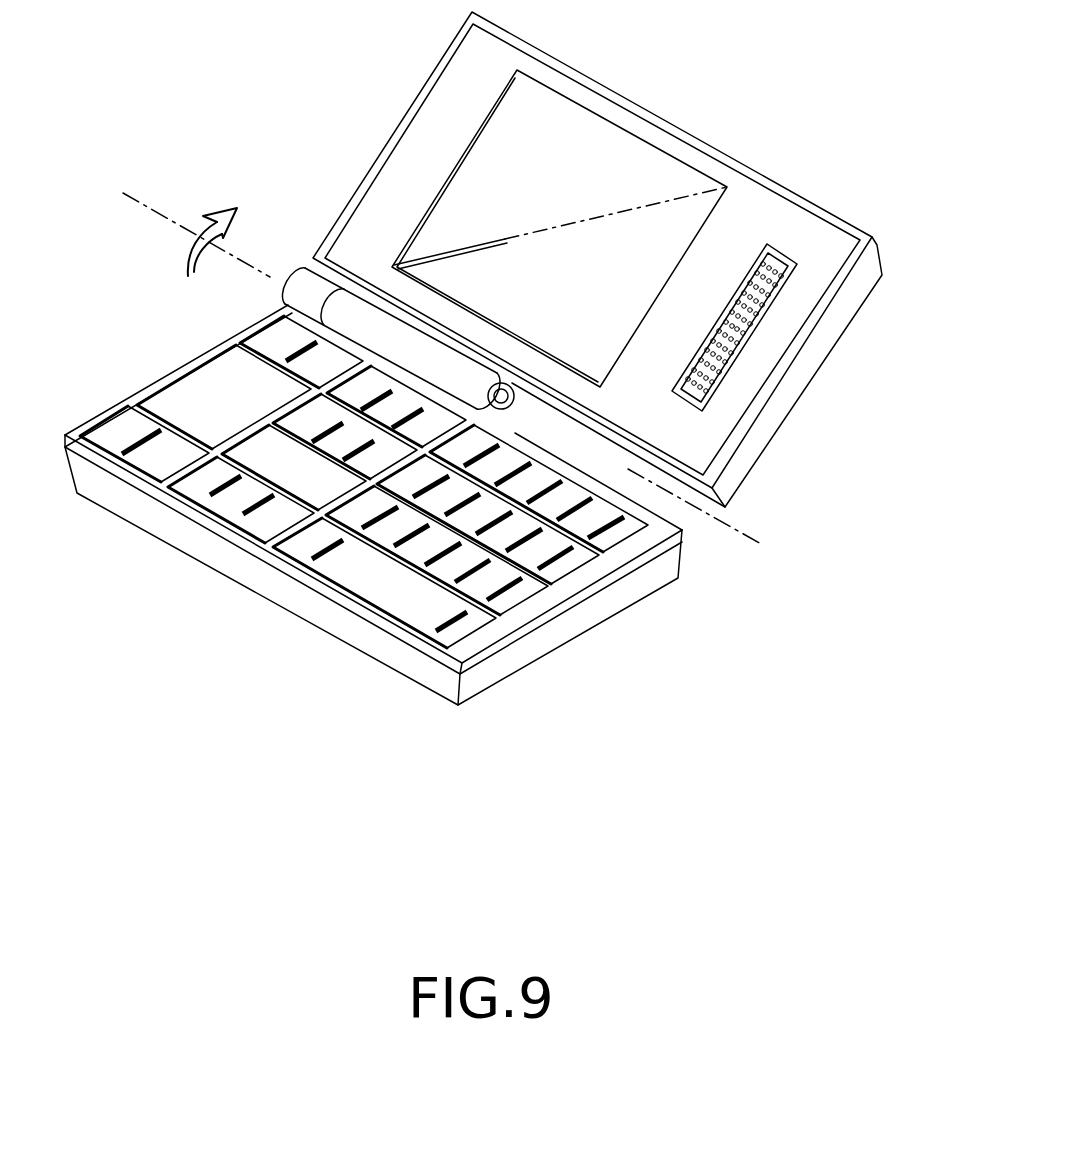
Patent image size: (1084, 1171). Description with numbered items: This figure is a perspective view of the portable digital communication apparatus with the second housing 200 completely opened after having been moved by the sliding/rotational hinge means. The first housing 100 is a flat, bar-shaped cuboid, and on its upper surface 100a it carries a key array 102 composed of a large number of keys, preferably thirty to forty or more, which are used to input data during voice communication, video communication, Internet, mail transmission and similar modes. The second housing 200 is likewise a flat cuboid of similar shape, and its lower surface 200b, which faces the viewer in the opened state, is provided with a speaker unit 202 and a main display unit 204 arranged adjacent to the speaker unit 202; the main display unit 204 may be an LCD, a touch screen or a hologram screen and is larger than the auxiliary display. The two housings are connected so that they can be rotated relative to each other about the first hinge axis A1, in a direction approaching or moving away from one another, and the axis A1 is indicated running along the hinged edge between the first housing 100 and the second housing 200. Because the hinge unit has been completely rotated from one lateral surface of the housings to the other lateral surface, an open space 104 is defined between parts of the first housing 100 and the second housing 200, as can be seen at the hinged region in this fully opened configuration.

The first housing 100 is at (407, 505).
The upper surface 100a is at (538, 613).
The key array 102 is at (543, 552).
The open space 104 is at (657, 503).
The second housing 200 is at (625, 257).
The lower surface 200b is at (783, 222).
The speaker unit 202 is at (725, 355).
The main display unit 204 is at (612, 157).
The first hinge axis A1 is at (728, 527).